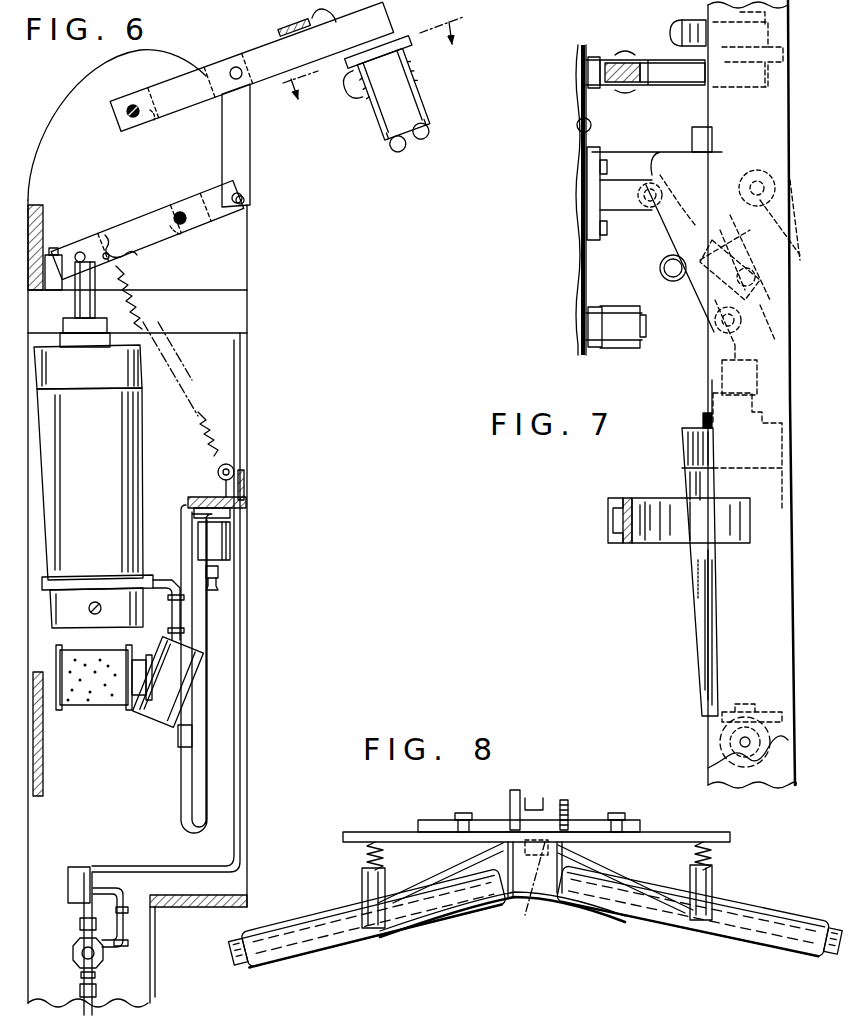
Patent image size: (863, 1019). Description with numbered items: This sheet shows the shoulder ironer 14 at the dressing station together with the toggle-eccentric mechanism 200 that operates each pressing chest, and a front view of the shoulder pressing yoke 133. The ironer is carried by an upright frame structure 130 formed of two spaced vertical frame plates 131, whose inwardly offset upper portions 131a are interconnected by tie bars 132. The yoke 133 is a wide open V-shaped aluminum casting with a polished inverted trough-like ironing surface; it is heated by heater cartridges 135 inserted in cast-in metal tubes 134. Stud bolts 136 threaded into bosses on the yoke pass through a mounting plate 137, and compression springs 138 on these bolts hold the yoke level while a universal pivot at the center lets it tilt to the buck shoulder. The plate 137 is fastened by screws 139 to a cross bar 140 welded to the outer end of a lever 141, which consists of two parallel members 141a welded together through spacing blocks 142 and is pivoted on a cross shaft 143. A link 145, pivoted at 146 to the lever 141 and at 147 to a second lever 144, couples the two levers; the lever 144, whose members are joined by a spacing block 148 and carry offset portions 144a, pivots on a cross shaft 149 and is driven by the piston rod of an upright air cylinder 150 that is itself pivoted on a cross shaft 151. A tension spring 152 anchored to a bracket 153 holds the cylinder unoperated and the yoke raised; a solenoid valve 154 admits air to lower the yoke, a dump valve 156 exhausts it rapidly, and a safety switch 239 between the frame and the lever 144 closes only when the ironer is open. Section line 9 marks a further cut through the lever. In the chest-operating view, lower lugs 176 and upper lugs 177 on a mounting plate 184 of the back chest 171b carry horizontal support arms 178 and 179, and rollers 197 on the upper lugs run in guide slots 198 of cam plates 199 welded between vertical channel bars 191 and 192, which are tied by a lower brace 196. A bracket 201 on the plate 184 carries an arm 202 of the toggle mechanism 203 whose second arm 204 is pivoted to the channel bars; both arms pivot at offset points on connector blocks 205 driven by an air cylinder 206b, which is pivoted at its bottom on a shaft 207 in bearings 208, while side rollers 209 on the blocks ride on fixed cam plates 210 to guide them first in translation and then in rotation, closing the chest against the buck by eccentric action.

In FIG. 6, the section line 9- 9 is at (373, 69).
In FIG. 6, the shoulder ironer 14 is at (430, 100).
In FIG. 6, the upright frame structure 130 is at (252, 312).
In FIG. 6, the vertical frame plates 131 is at (232, 398).
In FIG. 6, the housing dome 131a is at (68, 108).
In FIG. 6, the tie bars 132 is at (34, 212).
In FIG. 8, the yoke 133 is at (736, 914).
In FIG. 8, the cast-in metal tubes 134 is at (300, 915).
In FIG. 8, the heater cartridges 135 is at (233, 966).
In FIG. 8, the stud bolts 136 is at (382, 858).
In FIG. 8, the mounting plate 137 is at (406, 810).
In FIG. 8, the compression springs 138 is at (368, 852).
In FIG. 8, the screws 139 is at (486, 800).
In FIG. 8, the cross bar 140 is at (576, 820).
In FIG. 6, the lever 141 is at (246, 46).
In FIG. 8, the parallel members 141a is at (525, 790).
In FIG. 6, the spacing blocks 142 is at (158, 108).
In FIG. 6, the cross shaft 143 is at (122, 114).
In FIG. 6, the lever 144 is at (138, 254).
In FIG. 6, the arm portion 144a is at (132, 222).
In FIG. 6, the link 145 is at (248, 154).
In FIG. 6, the pivot 146 is at (242, 78).
In FIG. 6, the pivot 147 is at (244, 210).
In FIG. 6, the spacing block 148 is at (192, 218).
In FIG. 6, the cross shaft 149 is at (180, 232).
In FIG. 6, the air cylinder 150 is at (122, 464).
In FIG. 6, the cross shaft 151 is at (96, 614).
In FIG. 6, the tension spring 152 is at (176, 366).
In FIG. 6, the bracket 153 is at (246, 502).
In FIG. 6, the solenoid valve 154 is at (232, 546).
In FIG. 6, the dump valve 156 is at (160, 722).
In FIG. 7, the back chest 171b is at (578, 246).
In FIG. 7, the lower pair of lugs 176 is at (592, 346).
In FIG. 7, the upper pair of lugs 177 is at (650, 68).
In FIG. 7, the horizontal support arm 178 is at (636, 330).
In FIG. 7, the horizontal support arm 179 is at (630, 83).
In FIG. 7, the mounting plate 184 is at (576, 126).
In FIG. 7, the vertical channel bar 191 is at (778, 774).
In FIG. 7, the vertical channel bar 192 is at (739, 622).
In FIG. 7, the lower brace 196 is at (655, 532).
In FIG. 7, the rollers 197 is at (785, 50).
In FIG. 7, the guide slots 198 is at (672, 74).
In FIG. 7, the cam plates 199 is at (690, 22).
In FIG. 7, the toggle-eccentric mechanism 200 is at (662, 282).
In FIG. 7, the bracket 201 is at (648, 182).
In FIG. 7, the arm 202 is at (662, 246).
In FIG. 7, the toggle mechanism 203 is at (760, 280).
In FIG. 7, the second arm 204 is at (780, 232).
In FIG. 7, the connector blocks 205 is at (700, 318).
In FIG. 7, the air cylinder 206b is at (700, 575).
In FIG. 7, the shaft 207 is at (740, 742).
In FIG. 7, the bearings 208 is at (788, 726).
In FIG. 7, the side rollers 209 is at (660, 266).
In FIG. 7, the fixed cam plates 210 is at (682, 154).
In FIG. 6, the safety switch 239 is at (70, 297).